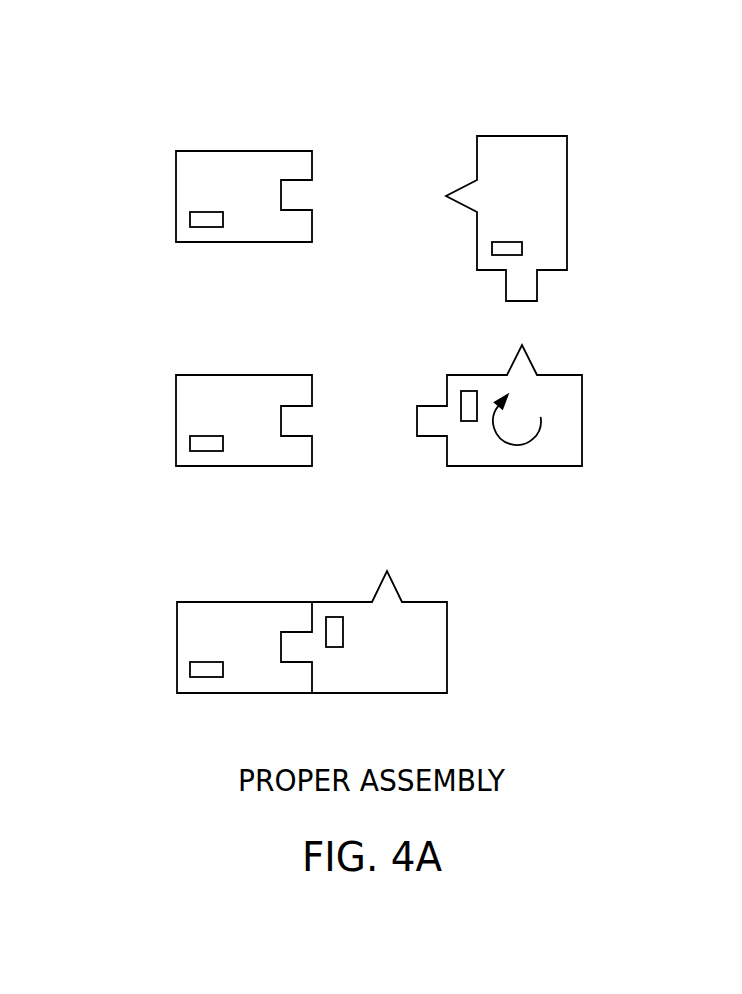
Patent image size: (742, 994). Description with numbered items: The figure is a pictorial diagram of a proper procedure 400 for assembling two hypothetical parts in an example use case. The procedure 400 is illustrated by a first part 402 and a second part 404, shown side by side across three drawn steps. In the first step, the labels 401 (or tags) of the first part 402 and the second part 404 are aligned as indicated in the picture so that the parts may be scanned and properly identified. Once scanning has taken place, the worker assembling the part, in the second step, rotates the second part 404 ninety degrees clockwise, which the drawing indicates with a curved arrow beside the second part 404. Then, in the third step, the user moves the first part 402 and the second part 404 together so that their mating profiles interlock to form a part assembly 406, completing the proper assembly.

The proper procedure 400 is at (633, 39).
The label 401 is at (192, 227).
The first part P1 402 is at (176, 165).
The second part P2 404 is at (477, 155).
The part assembly PA 406 is at (177, 617).